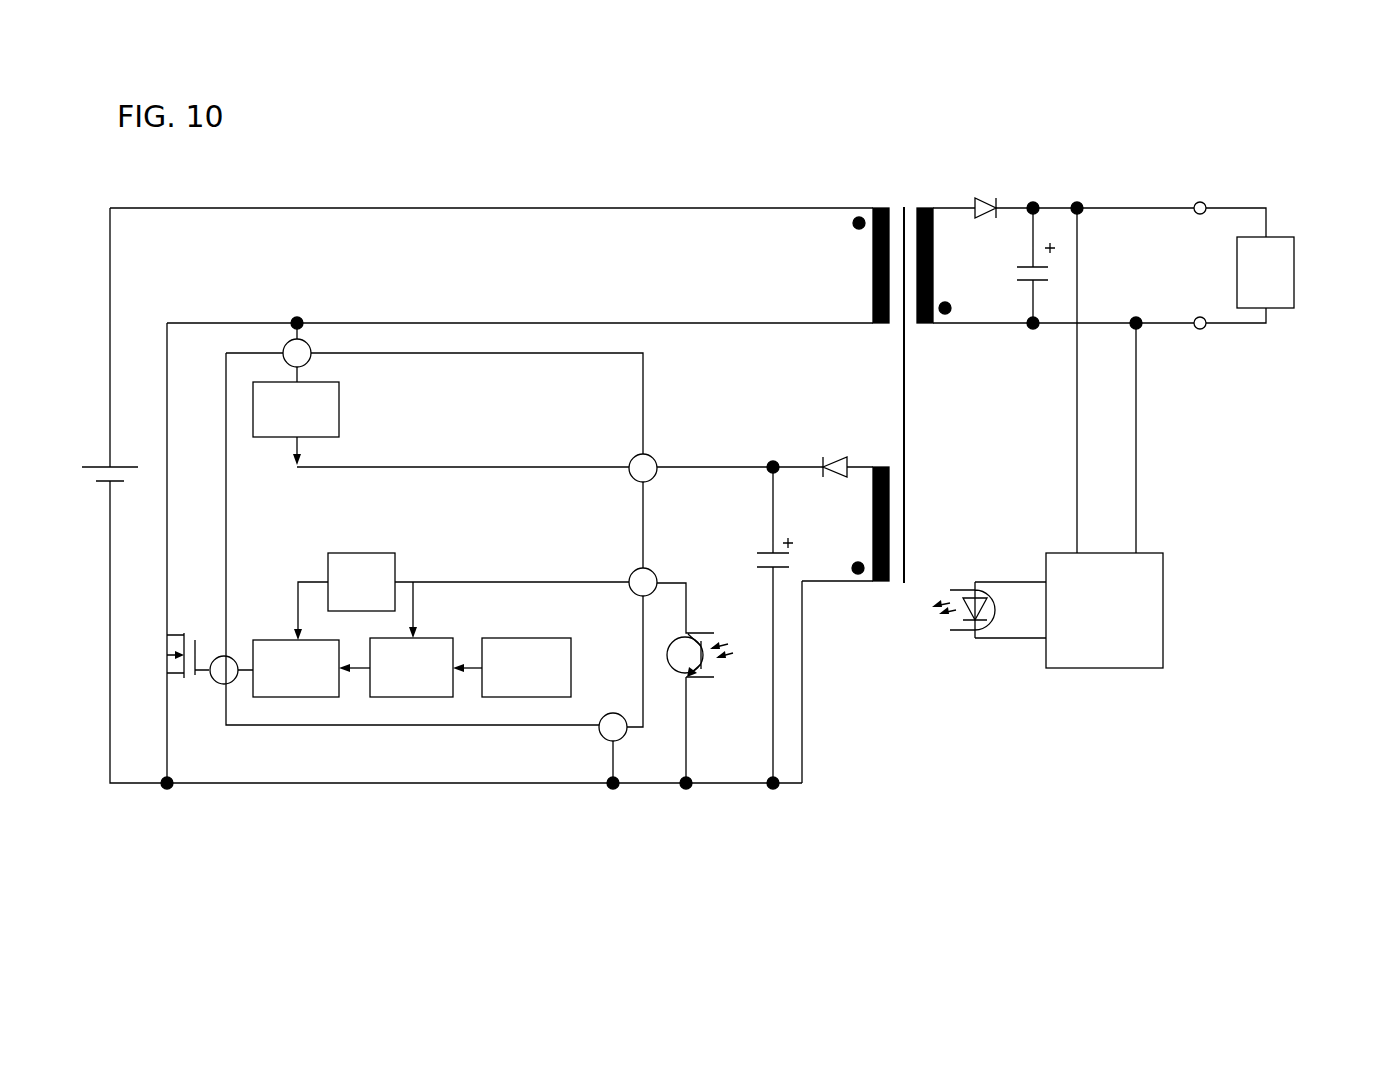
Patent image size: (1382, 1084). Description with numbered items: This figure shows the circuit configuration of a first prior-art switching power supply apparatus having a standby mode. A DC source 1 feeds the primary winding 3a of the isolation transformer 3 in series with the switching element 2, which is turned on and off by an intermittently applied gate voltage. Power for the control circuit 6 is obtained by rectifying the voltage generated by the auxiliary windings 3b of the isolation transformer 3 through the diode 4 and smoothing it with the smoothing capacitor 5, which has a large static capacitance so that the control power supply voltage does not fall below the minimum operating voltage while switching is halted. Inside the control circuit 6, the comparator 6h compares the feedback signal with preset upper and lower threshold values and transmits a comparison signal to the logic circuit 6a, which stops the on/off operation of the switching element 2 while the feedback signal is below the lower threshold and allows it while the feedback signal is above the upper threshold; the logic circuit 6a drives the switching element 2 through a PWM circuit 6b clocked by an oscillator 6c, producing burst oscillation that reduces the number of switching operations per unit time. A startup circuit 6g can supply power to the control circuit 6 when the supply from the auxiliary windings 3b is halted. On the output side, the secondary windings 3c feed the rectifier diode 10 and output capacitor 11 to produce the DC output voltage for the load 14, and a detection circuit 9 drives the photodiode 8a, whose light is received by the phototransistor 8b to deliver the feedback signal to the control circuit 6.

The DC power source (battery) 1 is at (97, 453).
The switching element 2 is at (152, 625).
The isolation transformer 3 is at (899, 458).
The primary winding 3a is at (858, 283).
The auxiliary windings 3b is at (858, 540).
The secondary windings 3c is at (945, 268).
The rectifier diode 4 is at (845, 440).
The smoothing capacitor 5 is at (757, 560).
The control circuit 6 is at (452, 527).
The logic circuit 6a is at (295, 710).
The PWM circuit 6b is at (395, 712).
The oscillator 6c is at (515, 712).
The startup circuit 6g is at (353, 393).
The comparator 6h is at (365, 553).
The photodiode 8a is at (975, 653).
The phototransistor 8b is at (713, 683).
The output voltage detection circuit 9 is at (1105, 683).
The output rectifier diode 10 is at (990, 193).
The output smoothing capacitor 11 is at (1015, 265).
The load 14 is at (1308, 265).